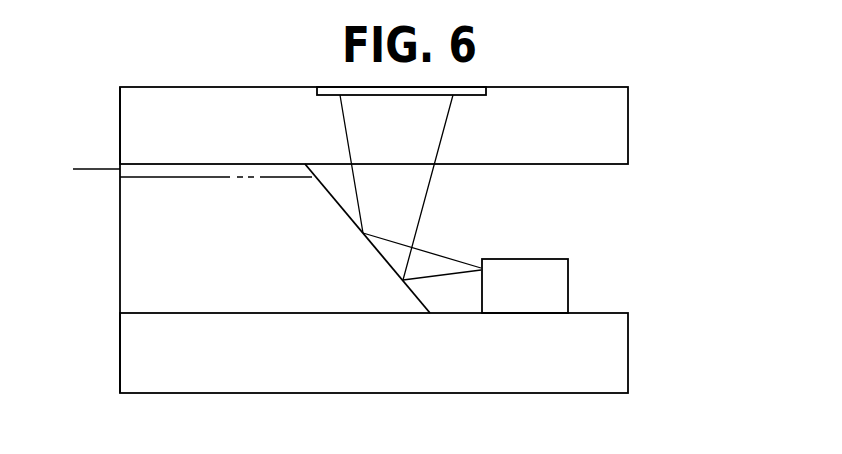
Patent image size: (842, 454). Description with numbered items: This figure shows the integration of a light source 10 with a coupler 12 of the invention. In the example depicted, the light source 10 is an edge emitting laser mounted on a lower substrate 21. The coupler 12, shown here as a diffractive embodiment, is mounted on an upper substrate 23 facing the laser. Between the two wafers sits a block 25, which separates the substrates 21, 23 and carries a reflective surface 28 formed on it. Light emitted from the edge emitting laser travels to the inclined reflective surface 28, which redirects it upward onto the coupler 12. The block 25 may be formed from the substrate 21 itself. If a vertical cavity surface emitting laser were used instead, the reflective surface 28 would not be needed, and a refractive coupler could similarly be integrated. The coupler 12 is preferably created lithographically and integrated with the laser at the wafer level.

The substrate 23 is at (628, 125).
The substrate 21 is at (628, 357).
The block 25 is at (120, 268).
The coupler 12 is at (321, 86).
The reflective surface 28 is at (332, 199).
The light source 10 is at (568, 290).